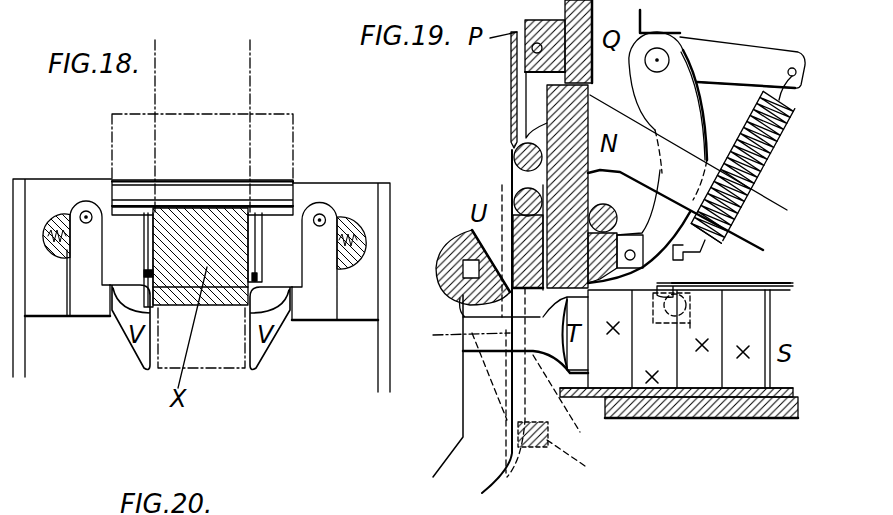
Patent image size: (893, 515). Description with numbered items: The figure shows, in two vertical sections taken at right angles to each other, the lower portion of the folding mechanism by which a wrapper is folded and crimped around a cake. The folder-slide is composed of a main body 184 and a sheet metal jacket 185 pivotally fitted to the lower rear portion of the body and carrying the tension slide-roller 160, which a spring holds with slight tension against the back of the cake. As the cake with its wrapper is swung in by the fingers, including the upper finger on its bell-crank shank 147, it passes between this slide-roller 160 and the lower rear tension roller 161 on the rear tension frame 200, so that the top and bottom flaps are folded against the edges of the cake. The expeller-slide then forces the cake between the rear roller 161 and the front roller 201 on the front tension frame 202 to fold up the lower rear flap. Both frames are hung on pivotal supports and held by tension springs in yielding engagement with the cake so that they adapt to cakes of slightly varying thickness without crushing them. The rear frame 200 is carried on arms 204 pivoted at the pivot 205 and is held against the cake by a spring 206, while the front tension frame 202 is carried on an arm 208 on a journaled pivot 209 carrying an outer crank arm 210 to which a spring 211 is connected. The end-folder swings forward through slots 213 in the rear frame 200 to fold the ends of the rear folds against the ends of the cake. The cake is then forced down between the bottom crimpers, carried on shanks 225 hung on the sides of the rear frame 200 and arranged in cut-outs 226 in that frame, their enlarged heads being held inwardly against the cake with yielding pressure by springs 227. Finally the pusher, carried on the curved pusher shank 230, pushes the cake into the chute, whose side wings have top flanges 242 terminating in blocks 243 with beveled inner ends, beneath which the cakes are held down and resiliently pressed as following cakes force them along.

In FIG. 18, the arms 204 is at (17, 357).
In FIG. 19, the arms 204 is at (579, 407).
In FIG. 18, the rear tension frame 200 is at (360, 300).
In FIG. 19, the rear tension frame 200 is at (513, 222).
In FIG. 18, the lower rear tension roller 161 is at (268, 190).
In FIG. 19, the lower rear tension roller 161 is at (505, 186).
In FIG. 18, the slots 213 is at (145, 228).
In FIG. 18, the springs 227 is at (44, 230).
In FIG. 19, the springs 227 is at (450, 243).
In FIG. 18, the shanks 225 is at (127, 240).
In FIG. 18, the cut-outs 226 is at (68, 277).
In FIG. 19, the body of the folder-slide 184 is at (524, 60).
In FIG. 19, the sheet metal jacket 185 is at (510, 88).
In FIG. 19, the slide-roller 160 is at (516, 157).
In FIG. 19, the front roller 201 is at (614, 206).
In FIG. 19, the pivot 205 is at (463, 343).
In FIG. 19, the curved pusher shank 230 is at (490, 417).
In FIG. 19, the spring 206 is at (571, 456).
In FIG. 19, the arm 208 is at (668, 116).
In FIG. 19, the pivot 209 is at (660, 58).
In FIG. 19, the outer crank arm 210 is at (742, 62).
In FIG. 19, the spring 211 is at (741, 131).
In FIG. 19, the bell-crank shank 147 is at (689, 163).
In FIG. 19, the front tension frame 202 is at (650, 265).
In FIG. 19, the top flanges 242 is at (745, 286).
In FIG. 19, the blocks 243 is at (660, 325).